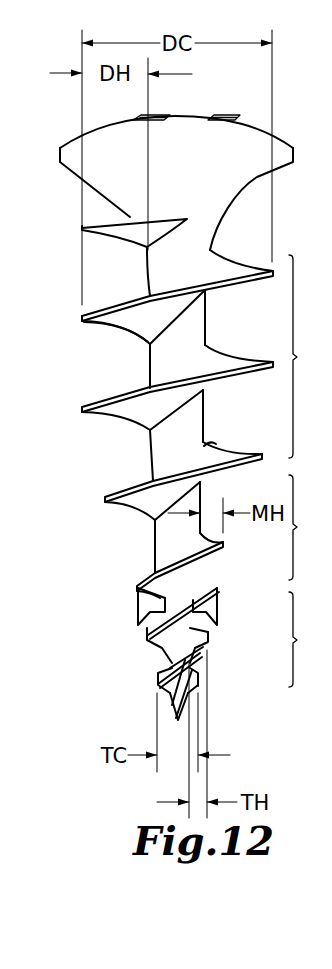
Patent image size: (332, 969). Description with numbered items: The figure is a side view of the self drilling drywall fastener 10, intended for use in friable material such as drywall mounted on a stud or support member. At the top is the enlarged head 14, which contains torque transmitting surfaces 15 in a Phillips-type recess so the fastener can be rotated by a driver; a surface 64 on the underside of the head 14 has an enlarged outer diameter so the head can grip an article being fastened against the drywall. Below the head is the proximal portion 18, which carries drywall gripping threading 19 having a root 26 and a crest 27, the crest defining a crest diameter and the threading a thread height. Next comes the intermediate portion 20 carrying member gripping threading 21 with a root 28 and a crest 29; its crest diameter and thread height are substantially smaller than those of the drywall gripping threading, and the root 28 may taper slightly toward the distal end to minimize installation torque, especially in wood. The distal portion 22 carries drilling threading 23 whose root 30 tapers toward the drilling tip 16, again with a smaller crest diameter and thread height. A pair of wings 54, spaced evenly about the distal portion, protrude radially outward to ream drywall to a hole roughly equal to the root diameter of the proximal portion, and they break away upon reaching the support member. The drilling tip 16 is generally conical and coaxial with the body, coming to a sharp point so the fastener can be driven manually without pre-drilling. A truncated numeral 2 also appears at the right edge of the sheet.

The drywall fastener 10 is at (84, 514).
The enlarged head 14 is at (240, 123).
The torque transmitting surfaces 15 is at (160, 113).
The surface 64 is at (257, 178).
The crest 27 is at (82, 318).
The drywall gripping threading 19 is at (122, 325).
The root 26 is at (150, 380).
The proximal portion 18 is at (309, 356).
The fastener 2 is at (325, 308).
The intermediate portion 20 is at (310, 527).
The member gripping threading 21 is at (190, 552).
The distal portion 22 is at (310, 639).
The root 28 is at (217, 582).
The crest 29 is at (140, 590).
The wing 54 is at (148, 630).
The root 30 is at (160, 675).
The drilling threading 23 is at (199, 685).
The drilling tip 16 is at (176, 712).